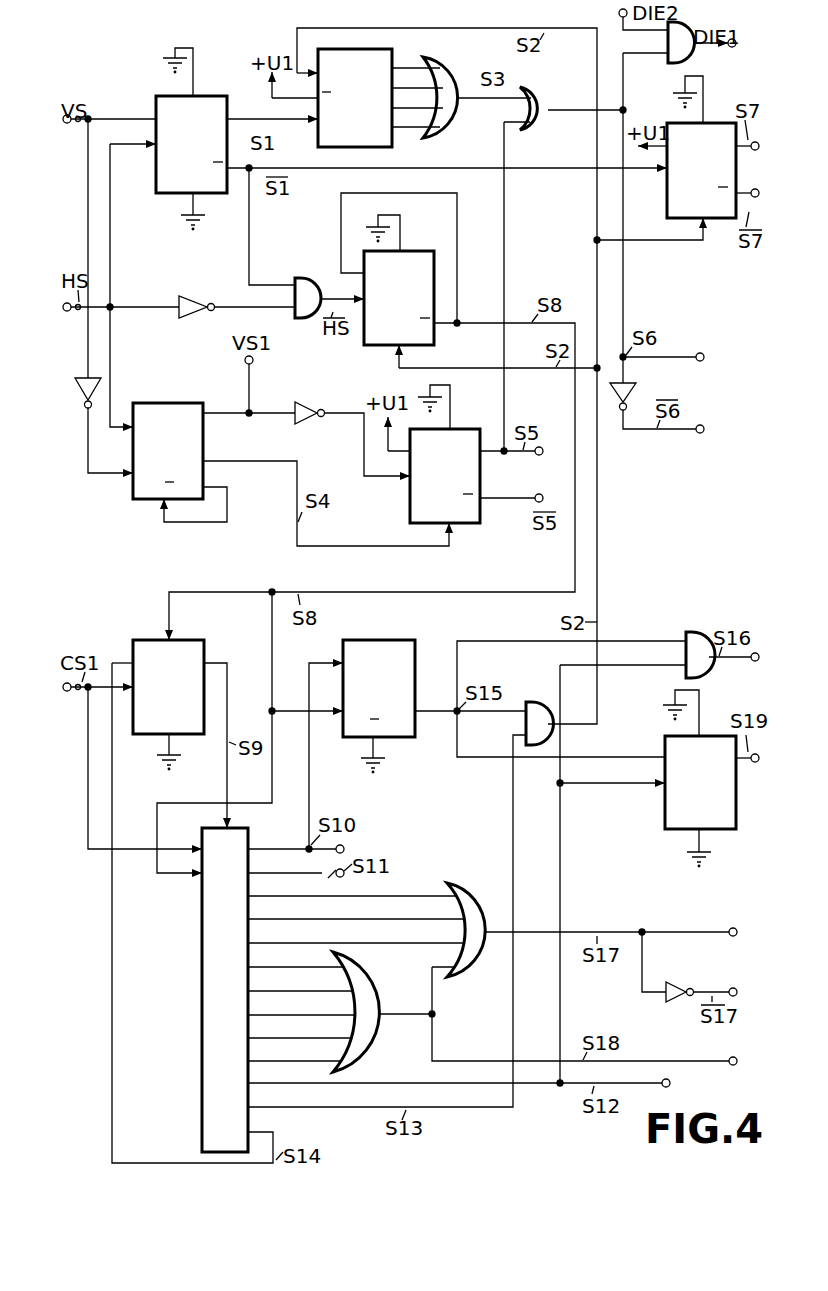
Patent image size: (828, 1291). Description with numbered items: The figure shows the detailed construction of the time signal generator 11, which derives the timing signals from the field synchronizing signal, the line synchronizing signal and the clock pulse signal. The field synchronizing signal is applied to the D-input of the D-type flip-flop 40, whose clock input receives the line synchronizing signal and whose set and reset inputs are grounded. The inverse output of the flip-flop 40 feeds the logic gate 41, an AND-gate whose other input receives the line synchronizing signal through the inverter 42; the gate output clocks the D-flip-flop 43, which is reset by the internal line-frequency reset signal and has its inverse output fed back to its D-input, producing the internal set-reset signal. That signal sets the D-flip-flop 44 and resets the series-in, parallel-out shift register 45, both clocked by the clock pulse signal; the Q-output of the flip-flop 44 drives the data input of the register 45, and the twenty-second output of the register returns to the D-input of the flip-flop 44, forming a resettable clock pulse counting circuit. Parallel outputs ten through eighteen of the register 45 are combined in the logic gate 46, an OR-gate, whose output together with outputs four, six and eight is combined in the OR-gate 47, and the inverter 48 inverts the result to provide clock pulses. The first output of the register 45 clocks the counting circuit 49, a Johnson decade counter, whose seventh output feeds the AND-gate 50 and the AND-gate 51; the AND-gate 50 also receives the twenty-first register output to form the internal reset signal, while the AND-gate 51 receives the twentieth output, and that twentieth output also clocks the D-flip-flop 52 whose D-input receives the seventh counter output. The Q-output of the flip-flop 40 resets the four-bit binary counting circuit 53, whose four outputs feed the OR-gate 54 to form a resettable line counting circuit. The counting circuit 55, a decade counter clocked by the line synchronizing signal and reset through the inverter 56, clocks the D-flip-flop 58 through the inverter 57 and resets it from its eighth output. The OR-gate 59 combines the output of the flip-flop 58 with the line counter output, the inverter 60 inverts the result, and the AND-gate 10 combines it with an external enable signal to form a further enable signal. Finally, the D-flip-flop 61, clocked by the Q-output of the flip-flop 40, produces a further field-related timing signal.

The AND-gate 10 is at (672, 66).
The time signal generator 11 is at (690, 509).
The D-type flip-flop 40 is at (156, 105).
The logic gate 41 is at (311, 278).
The inverter 42 is at (183, 296).
The D-flip-flop 43 is at (382, 346).
The D-flip-flop 44 is at (149, 640).
The series-in, parallel-out shift register 45 is at (200, 946).
The logic gate 46 is at (377, 1004).
The OR-gate 47 is at (476, 905).
The inverter 48 is at (678, 985).
The counting circuit 49 is at (395, 738).
The AND-gate 50 is at (547, 702).
The AND-gate 51 is at (688, 634).
The D-flip-flop 52 is at (665, 805).
The 4-bit binary counting circuit 53 is at (392, 58).
The OR-gate 54 is at (452, 64).
The counting circuit 55 is at (178, 402).
The inverter 56 is at (99, 425).
The inverter 57 is at (310, 428).
The D-flip-flop 58 is at (484, 510).
The OR-gate 59 is at (548, 95).
The inverter 60 is at (612, 430).
The D-flip-flop 61 is at (714, 243).